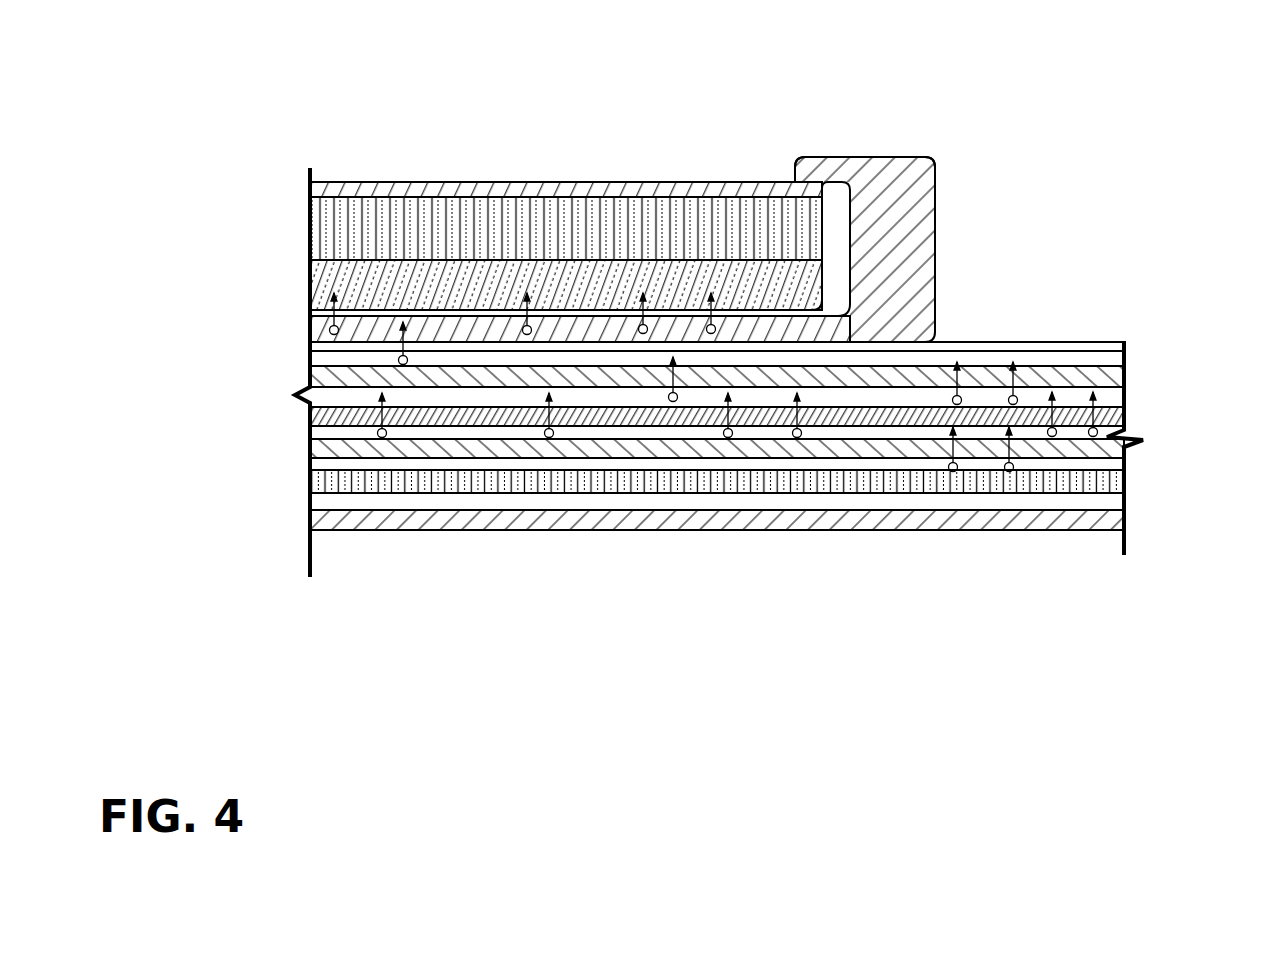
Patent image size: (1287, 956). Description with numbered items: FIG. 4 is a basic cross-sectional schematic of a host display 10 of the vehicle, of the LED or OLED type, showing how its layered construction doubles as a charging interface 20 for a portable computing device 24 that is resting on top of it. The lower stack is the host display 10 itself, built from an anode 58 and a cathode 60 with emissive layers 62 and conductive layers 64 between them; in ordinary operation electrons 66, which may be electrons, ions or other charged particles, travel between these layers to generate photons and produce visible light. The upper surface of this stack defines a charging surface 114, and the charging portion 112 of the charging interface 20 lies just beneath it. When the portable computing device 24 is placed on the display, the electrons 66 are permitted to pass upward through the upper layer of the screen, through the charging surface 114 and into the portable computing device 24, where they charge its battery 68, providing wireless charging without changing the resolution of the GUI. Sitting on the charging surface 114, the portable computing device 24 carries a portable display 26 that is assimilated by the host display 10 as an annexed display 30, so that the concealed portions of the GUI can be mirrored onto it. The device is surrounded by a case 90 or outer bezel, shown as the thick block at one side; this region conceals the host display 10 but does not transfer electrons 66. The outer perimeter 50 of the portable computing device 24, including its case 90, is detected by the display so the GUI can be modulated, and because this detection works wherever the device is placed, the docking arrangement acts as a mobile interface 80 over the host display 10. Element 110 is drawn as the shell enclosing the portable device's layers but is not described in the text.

The host display 10 is at (292, 352).
The charging interface 20 is at (268, 327).
The portable computing device 24 is at (748, 152).
The portable display 26 is at (408, 182).
The annexed display 30 is at (493, 173).
The outer perimeter 50 is at (935, 195).
The anode 58 is at (1125, 480).
The cathode 60 is at (1125, 380).
The emissive layers 62 is at (1125, 417).
The conductive layers 64 is at (1125, 450).
The electrons 66 is at (640, 325).
The battery 68 is at (330, 273).
The mobile interface 80 is at (1032, 258).
The case 90 is at (895, 157).
The housing shell 110 is at (552, 183).
The charging portion 112 is at (682, 348).
The charging surface 114 is at (1050, 340).